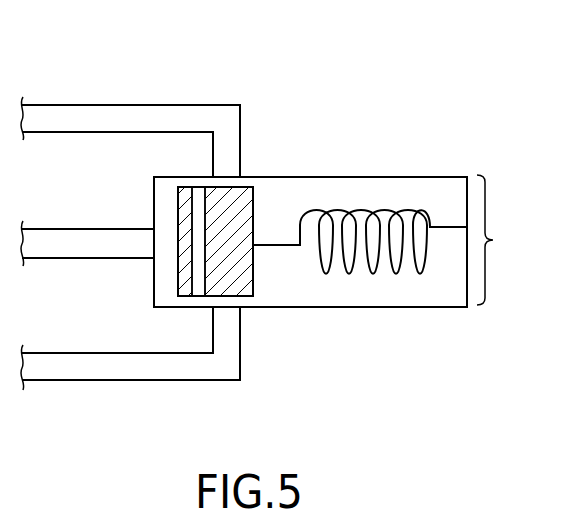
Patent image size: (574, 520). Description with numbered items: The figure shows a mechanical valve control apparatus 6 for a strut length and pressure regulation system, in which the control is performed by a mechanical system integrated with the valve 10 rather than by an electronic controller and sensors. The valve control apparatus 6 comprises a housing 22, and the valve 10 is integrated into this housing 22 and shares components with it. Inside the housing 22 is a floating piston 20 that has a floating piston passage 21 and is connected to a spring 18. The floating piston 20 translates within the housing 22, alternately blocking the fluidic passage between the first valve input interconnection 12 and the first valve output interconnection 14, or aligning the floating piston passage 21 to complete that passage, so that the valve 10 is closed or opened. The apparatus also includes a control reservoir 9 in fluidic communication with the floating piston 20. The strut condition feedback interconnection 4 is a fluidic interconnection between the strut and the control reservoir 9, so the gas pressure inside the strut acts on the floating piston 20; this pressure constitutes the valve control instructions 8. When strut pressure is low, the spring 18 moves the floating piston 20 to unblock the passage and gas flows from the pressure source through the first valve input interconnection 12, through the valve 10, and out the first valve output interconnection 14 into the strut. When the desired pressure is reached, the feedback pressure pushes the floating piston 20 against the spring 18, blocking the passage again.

The valve control apparatus 6 is at (322, 58).
The strut condition feedback interconnection 4 is at (60, 229).
The valve control instructions 8 is at (88, 243).
The control reservoir 9 is at (163, 208).
The valve 10 is at (499, 240).
The first valve input interconnection 12 is at (92, 104).
The first valve output interconnection 14 is at (80, 380).
The spring 18 is at (322, 210).
The floating piston 20 is at (250, 198).
The floating piston passage 21 is at (197, 297).
The housing 22 is at (303, 177).